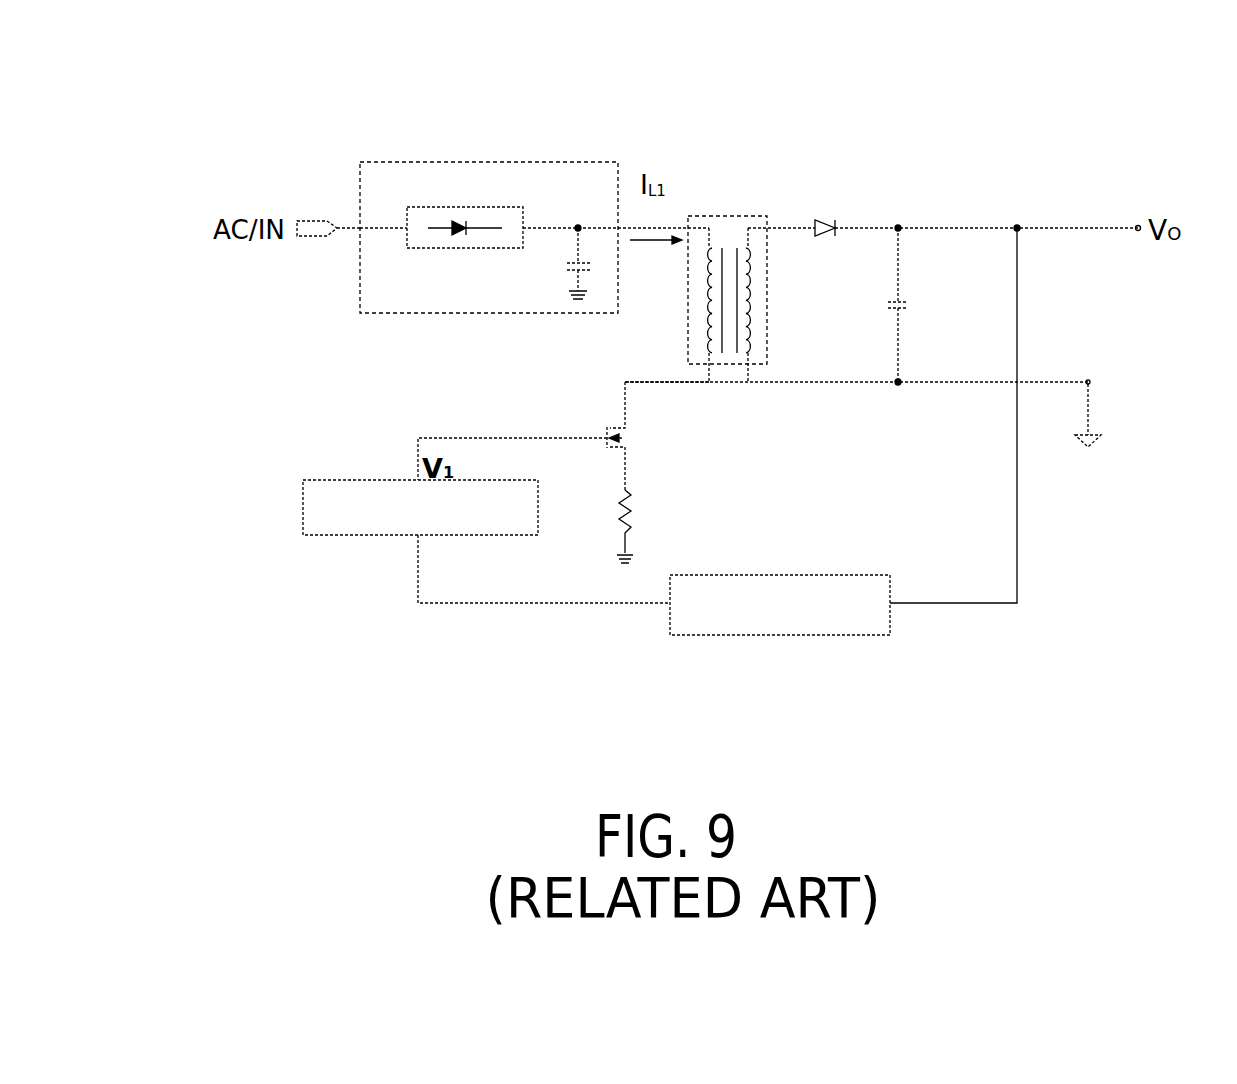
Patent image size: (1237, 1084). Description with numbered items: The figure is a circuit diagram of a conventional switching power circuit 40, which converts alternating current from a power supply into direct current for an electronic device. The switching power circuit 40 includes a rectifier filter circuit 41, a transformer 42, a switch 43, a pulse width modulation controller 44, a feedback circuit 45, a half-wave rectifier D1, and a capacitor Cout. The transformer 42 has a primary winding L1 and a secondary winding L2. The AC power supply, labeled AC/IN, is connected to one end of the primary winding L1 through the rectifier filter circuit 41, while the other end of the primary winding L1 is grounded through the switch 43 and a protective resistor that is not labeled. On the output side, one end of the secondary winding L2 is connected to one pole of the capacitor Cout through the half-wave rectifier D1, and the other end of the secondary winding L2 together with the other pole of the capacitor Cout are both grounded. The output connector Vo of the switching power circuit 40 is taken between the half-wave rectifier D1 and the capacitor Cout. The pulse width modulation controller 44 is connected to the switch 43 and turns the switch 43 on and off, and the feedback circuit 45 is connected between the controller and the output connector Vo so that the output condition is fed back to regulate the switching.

The switching power circuit 40 is at (1054, 150).
The rectifier filter circuit 41 is at (553, 162).
The transformer 42 is at (731, 263).
The switch 43 is at (607, 444).
The pulse width modulation (PWM) controller 44 is at (480, 535).
The feedback circuit 45 is at (812, 635).
The primary winding L1 is at (710, 293).
The secondary winding L2 is at (750, 293).
The half-wave rectifier D1 is at (834, 211).
The capacitor Cout is at (915, 307).